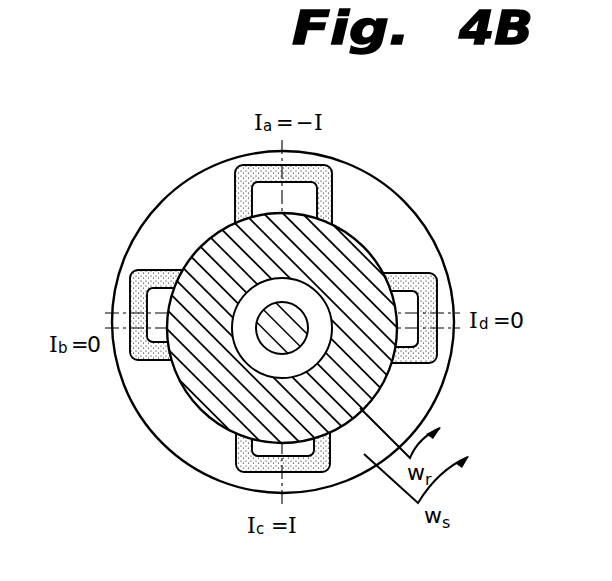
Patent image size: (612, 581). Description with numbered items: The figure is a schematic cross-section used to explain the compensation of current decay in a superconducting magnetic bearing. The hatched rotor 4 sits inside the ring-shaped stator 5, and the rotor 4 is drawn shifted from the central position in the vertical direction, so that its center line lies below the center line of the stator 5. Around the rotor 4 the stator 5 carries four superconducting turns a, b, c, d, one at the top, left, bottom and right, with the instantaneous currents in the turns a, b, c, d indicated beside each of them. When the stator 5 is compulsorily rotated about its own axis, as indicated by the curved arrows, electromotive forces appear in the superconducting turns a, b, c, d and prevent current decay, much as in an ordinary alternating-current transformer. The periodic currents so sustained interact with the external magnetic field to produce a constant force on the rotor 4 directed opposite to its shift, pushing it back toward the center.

The rotor 4 is at (348, 262).
The stator 5 is at (178, 228).
The superconducting turn a is at (234, 187).
The superconducting turn b is at (132, 365).
The superconducting turn c is at (232, 468).
The superconducting turn d is at (433, 274).